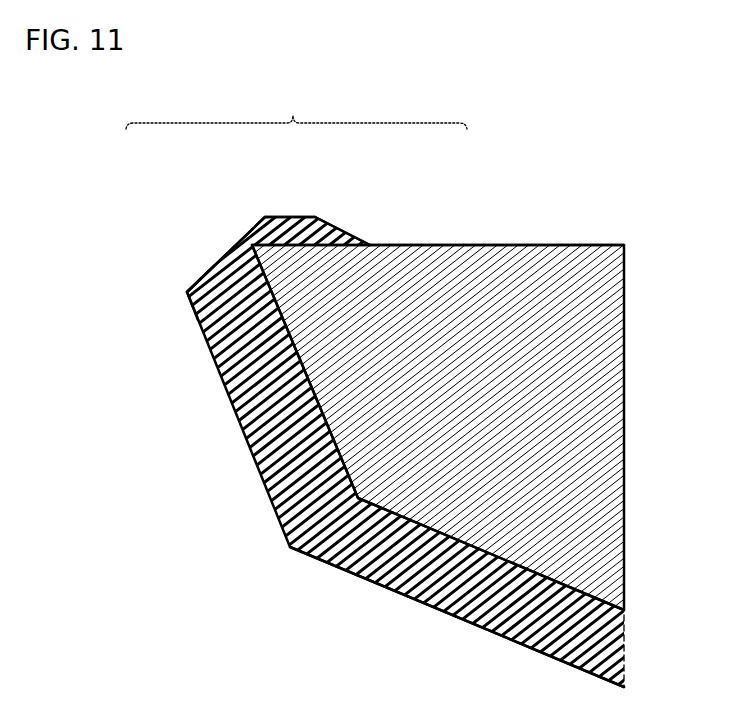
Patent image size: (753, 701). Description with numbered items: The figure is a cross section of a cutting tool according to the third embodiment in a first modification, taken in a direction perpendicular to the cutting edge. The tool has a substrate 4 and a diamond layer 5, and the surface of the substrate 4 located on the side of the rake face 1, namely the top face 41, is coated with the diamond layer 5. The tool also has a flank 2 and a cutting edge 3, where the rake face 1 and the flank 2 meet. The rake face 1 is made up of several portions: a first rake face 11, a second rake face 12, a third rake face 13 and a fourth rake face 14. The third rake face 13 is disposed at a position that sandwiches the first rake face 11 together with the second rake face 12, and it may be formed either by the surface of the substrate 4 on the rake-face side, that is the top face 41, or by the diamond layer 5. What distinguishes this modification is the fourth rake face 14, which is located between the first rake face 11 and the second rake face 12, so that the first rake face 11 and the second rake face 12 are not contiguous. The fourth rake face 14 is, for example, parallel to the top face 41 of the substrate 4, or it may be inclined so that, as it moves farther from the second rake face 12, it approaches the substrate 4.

The rake face 1 is at (368, 188).
The flank 2 is at (228, 396).
The cutting edge 3 is at (187, 292).
The substrate 4 is at (603, 387).
The diamond layer 5 is at (600, 645).
The first rake face 11 is at (348, 237).
The second rake face 12 is at (231, 245).
The third rake face 13 is at (472, 245).
The fourth rake face 14 is at (281, 217).
The top face 41 is at (497, 194).